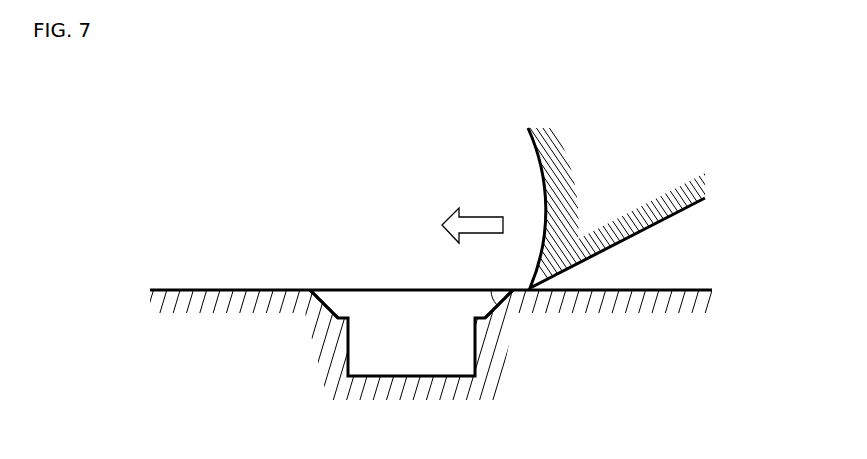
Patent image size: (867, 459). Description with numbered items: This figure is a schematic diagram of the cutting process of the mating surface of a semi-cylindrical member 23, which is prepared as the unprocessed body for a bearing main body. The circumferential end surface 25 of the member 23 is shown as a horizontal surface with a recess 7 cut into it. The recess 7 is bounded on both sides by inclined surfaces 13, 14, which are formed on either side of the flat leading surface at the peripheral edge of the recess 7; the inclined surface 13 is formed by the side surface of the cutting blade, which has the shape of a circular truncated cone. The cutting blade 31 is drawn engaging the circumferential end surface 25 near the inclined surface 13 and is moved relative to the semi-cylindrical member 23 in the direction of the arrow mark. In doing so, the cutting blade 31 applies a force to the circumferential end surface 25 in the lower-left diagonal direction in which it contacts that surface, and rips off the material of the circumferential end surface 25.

The recess 7 is at (411, 333).
The inclined surface 13 is at (510, 296).
The inclined surface 14 is at (330, 289).
The semi-cylindrical member 23 is at (650, 340).
The circumferential end surface 25 is at (638, 289).
The cutting blade 31 is at (634, 210).